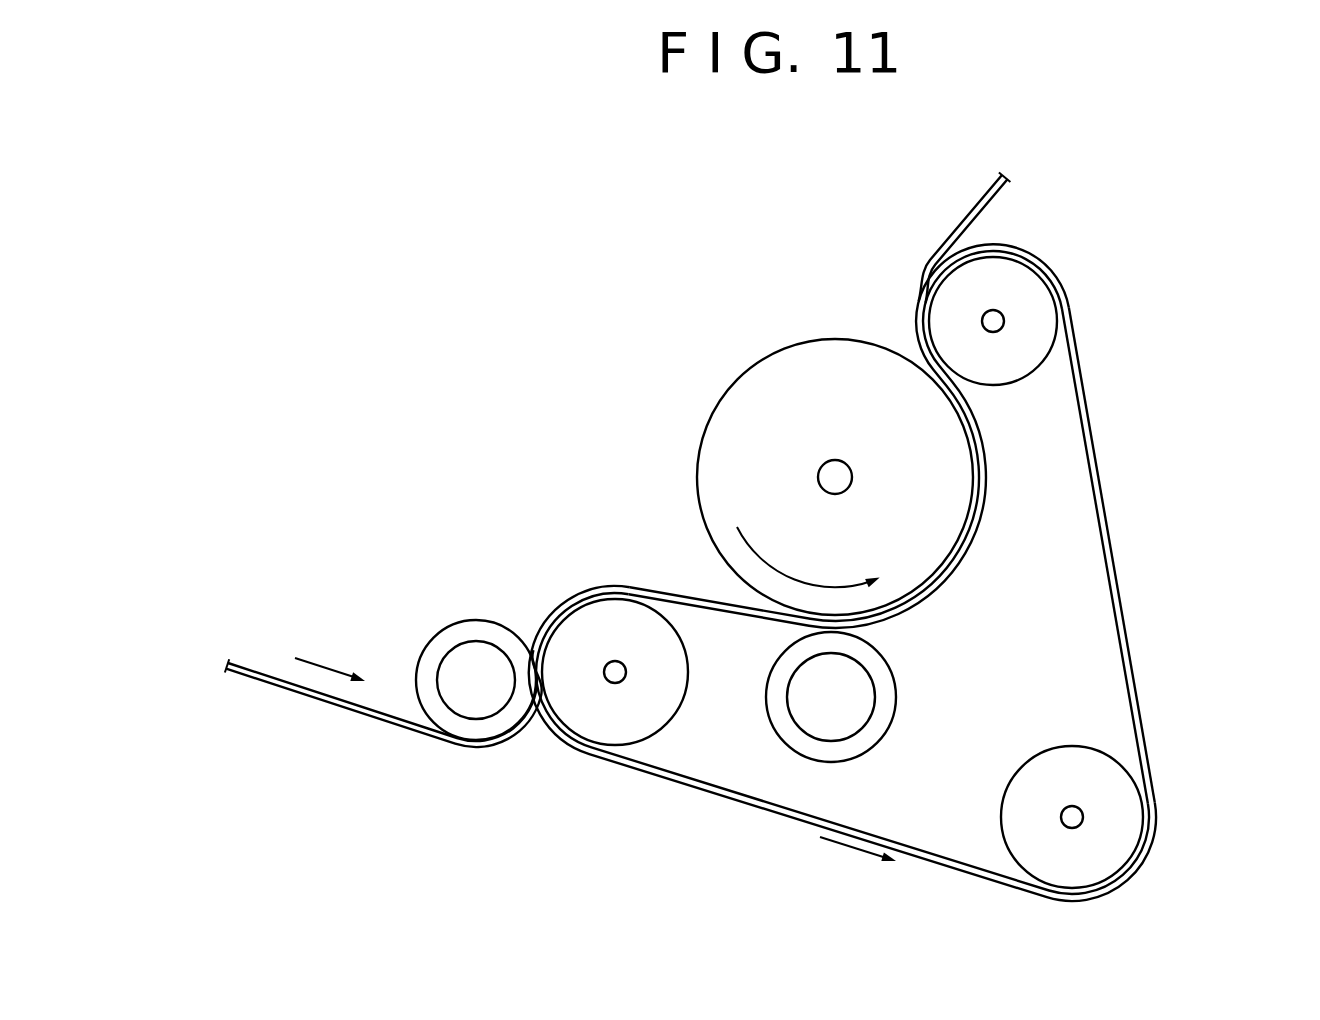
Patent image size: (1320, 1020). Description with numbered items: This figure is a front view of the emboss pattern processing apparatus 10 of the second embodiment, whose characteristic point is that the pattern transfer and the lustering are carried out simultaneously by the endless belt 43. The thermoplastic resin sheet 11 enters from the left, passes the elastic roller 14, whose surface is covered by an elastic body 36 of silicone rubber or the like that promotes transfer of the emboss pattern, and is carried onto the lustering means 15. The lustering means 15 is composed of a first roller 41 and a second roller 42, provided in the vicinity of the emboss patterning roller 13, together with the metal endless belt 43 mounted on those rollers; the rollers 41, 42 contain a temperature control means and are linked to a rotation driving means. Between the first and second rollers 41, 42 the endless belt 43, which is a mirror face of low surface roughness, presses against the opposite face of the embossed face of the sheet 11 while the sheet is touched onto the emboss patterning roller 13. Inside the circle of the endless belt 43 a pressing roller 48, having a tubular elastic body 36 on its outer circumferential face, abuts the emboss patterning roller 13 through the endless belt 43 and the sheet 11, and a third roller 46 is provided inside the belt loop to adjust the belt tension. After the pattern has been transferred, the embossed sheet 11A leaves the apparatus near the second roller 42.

The emboss pattern processing apparatus 10 is at (1126, 347).
The thermoplastic resin sheet 11 is at (285, 688).
The embossed sheet 11A is at (967, 215).
The emboss patterning roller 13 is at (768, 395).
The elastic roller 14 is at (473, 665).
The lustering means 15 is at (657, 767).
The elastic body 36 is at (433, 647).
The first roller 41 is at (660, 708).
The second roller 42 is at (1027, 293).
The metal endless belt 43 is at (1122, 614).
The third roller 46 is at (1122, 818).
The pressing roller 48 is at (850, 688).